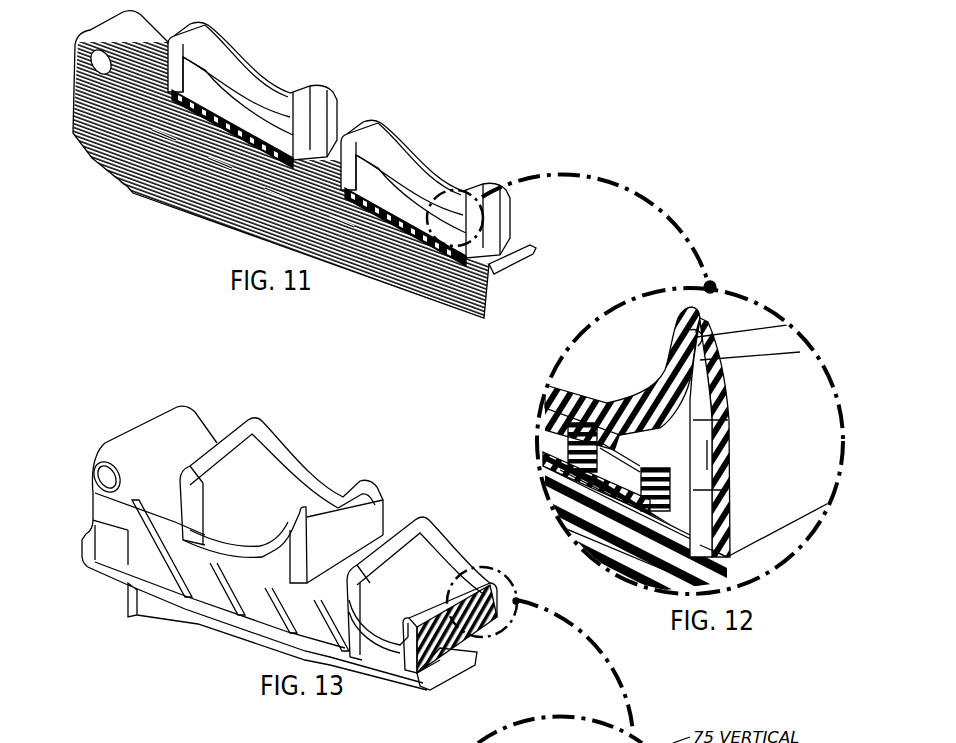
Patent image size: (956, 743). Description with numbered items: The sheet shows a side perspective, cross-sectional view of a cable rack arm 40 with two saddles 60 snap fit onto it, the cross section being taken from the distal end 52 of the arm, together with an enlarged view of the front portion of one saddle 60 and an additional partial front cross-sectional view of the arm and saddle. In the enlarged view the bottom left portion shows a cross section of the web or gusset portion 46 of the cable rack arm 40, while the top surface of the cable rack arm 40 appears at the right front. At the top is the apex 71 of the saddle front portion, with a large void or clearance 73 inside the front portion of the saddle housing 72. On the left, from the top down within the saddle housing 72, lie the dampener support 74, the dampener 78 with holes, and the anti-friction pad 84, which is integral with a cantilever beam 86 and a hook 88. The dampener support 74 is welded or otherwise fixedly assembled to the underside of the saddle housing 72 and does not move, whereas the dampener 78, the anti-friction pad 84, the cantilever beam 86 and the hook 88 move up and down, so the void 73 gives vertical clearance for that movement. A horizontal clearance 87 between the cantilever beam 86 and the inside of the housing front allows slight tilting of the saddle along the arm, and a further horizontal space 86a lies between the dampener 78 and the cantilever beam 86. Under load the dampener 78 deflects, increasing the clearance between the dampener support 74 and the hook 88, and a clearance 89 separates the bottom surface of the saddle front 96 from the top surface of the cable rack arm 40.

In FIG. 11, the cable rack arm 40 is at (407, 286).
In FIG. 12, the cable rack arm 40 is at (727, 557).
In FIG. 13, the cable rack arm 40 is at (447, 680).
In FIG. 12, the web or gusset portion 46 is at (648, 572).
In FIG. 11, the distal end 52 is at (536, 248).
In FIG. 11, the saddle 60 is at (233, 80).
In FIG. 13, the saddle 60 is at (287, 467).
In FIG. 12, the apex 71 is at (745, 328).
In FIG. 12, the saddle housing 72 is at (585, 400).
In FIG. 12, the void or clearance 73 is at (722, 325).
In FIG. 12, the dampener support 74 is at (790, 329).
In FIG. 12, the dampener 78 is at (630, 479).
In FIG. 12, the anti-friction pad 84 is at (548, 466).
In FIG. 12, the cantilever beam 86 is at (730, 491).
In FIG. 12, the horizontal space or clearance 86a is at (790, 520).
In FIG. 12, the horizontal clearance or space 87 is at (715, 468).
In FIG. 12, the hook 88 is at (730, 420).
In FIG. 12, the clearance or space 89 is at (735, 560).
In FIG. 12, the saddle front 96 is at (779, 522).